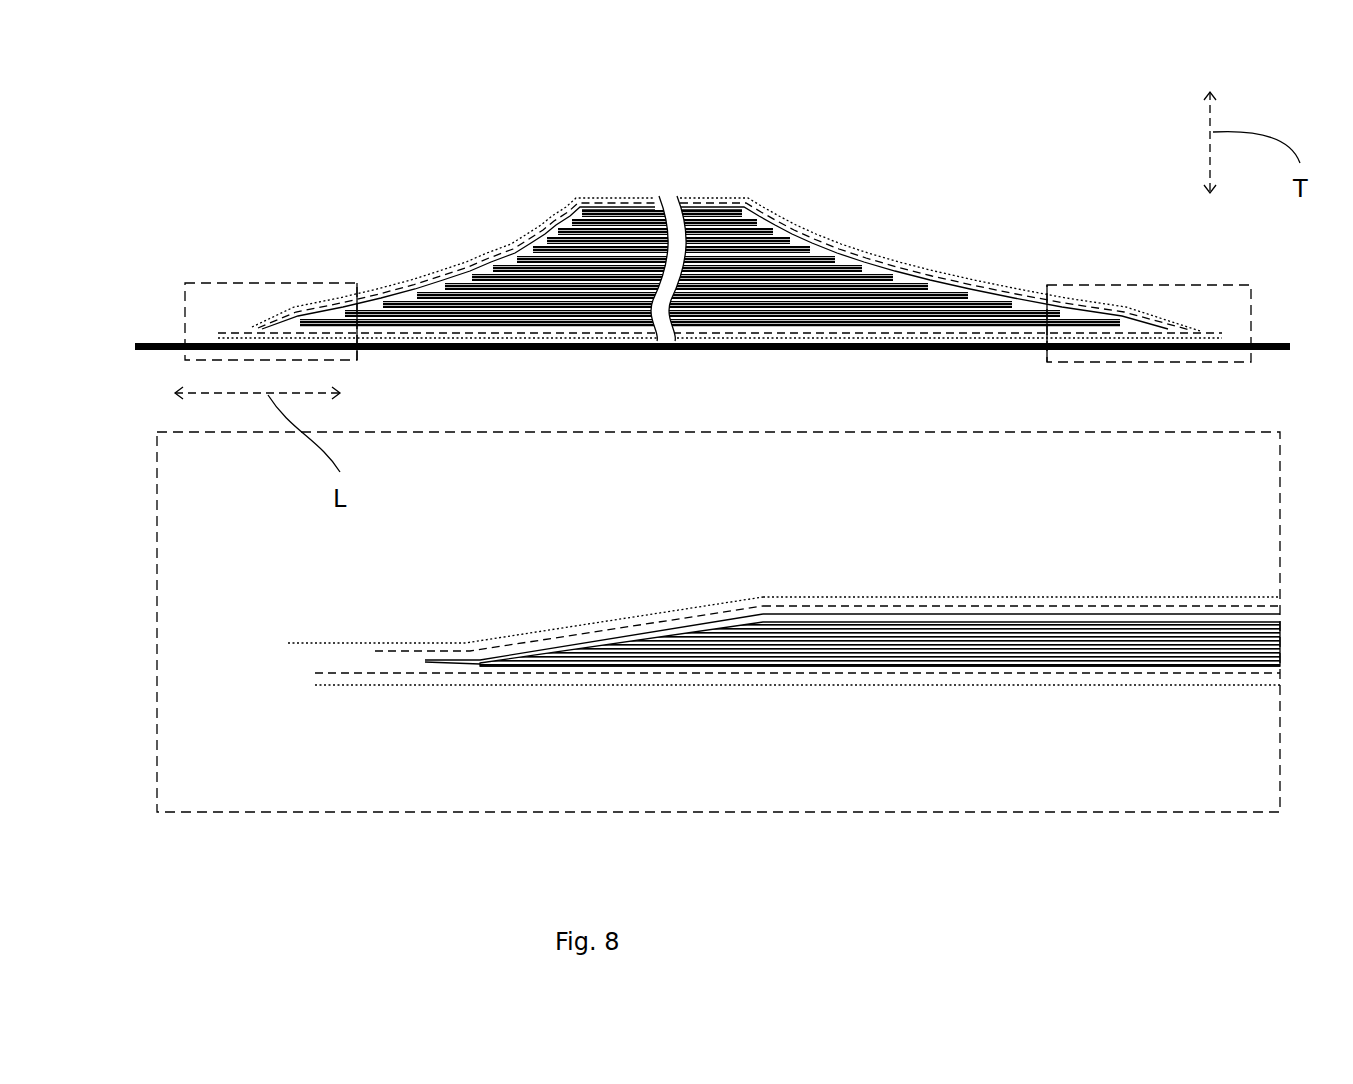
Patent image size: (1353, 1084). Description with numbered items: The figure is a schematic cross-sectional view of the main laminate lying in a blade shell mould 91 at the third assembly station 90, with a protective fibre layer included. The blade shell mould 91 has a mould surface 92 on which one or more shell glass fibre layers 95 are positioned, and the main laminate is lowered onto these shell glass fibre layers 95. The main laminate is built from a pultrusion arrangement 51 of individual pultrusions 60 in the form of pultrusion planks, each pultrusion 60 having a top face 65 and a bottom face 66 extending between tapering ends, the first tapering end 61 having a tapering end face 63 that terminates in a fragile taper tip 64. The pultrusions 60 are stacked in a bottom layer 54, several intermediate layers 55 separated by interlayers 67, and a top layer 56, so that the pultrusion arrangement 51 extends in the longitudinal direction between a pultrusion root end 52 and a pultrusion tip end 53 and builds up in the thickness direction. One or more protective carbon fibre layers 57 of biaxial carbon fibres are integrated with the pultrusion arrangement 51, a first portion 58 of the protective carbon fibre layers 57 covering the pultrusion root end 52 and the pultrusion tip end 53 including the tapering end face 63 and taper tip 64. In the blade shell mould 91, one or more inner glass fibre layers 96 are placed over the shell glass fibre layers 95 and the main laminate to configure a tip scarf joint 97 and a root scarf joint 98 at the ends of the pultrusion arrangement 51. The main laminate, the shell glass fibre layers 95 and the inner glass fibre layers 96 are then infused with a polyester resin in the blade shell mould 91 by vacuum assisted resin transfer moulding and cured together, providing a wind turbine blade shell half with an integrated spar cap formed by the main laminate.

The pultrusion arrangement 51 is at (630, 200).
The pultrusion root end 52 is at (310, 165).
The pultrusion tip end 53 is at (1085, 210).
The bottom layer 54 is at (1186, 648).
The intermediate layers 55 is at (385, 283).
The top layer 56 is at (560, 208).
The protective carbon fibre layers 57 is at (957, 603).
The first portion of the protective carbon fibre layers 58 is at (563, 640).
The pultrusions 60 is at (690, 205).
The first tapering end 61 is at (684, 674).
The tapering end face 63 is at (673, 637).
The taper tip 64 is at (440, 662).
The top face 65 is at (862, 613).
The bottom face 66 is at (815, 667).
The interlayers 67 is at (492, 258).
The third assembly station 90 is at (726, 194).
The blade shell mould 91 is at (1288, 330).
The mould surface 92 is at (173, 342).
The shell glass fibre layers 95 is at (1000, 698).
The inner glass fibre layers 96 is at (1164, 590).
The tip scarf joint 97 is at (1158, 300).
The root scarf joint 98 is at (294, 305).